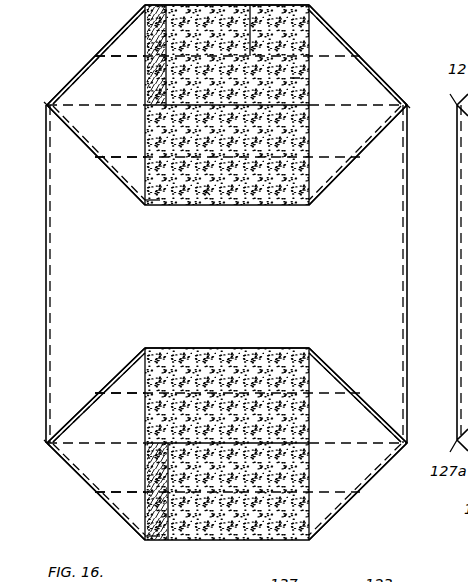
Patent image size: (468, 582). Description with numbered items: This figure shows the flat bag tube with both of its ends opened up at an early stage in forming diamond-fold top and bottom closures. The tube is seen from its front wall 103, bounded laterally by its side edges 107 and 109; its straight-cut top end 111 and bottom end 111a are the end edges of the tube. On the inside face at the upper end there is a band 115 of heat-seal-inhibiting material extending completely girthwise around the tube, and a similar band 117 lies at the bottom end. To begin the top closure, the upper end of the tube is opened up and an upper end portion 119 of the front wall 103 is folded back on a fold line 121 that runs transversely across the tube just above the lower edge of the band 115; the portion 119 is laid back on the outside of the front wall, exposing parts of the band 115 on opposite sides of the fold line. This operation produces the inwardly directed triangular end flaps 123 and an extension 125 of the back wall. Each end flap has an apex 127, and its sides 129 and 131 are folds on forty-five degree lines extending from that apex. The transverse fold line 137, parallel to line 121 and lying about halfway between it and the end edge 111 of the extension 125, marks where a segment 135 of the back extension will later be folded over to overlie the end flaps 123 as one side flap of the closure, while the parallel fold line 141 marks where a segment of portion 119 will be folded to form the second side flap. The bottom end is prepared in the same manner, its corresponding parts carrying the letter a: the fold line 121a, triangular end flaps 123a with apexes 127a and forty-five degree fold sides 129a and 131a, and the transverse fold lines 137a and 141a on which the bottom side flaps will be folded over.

The front wall 103 is at (233, 271).
The side edge 107 is at (48, 282).
The side edge 109 is at (405, 278).
The top end 111 is at (288, 8).
The bottom end 111a is at (289, 348).
The band of heat-seal-inhibiting material 115 is at (290, 78).
The band of heat-seal-inhibiting material 117 is at (228, 355).
The upper end portion of front wall 119 is at (150, 206).
The fold line 121 is at (290, 113).
The fold line 121a is at (290, 448).
The triangular end flap 123 is at (88, 68).
The triangular end flap 123a is at (80, 412).
The extension of back wall 125 is at (300, 32).
The apex of triangular end flap 127 is at (47, 105).
The apex of triangular end flap 127a is at (47, 443).
The side of triangular end flap 129 is at (106, 167).
The side of triangular end flap 129a is at (106, 505).
The side of triangular end flap 131 is at (106, 40).
The side of triangular end flap 131a is at (118, 372).
The segment of back extension 135 is at (189, 559).
The transverse fold line 137 is at (133, 64).
The transverse fold line 137a is at (110, 395).
The transverse fold line 141 is at (125, 157).
The transverse fold line 141a is at (125, 492).